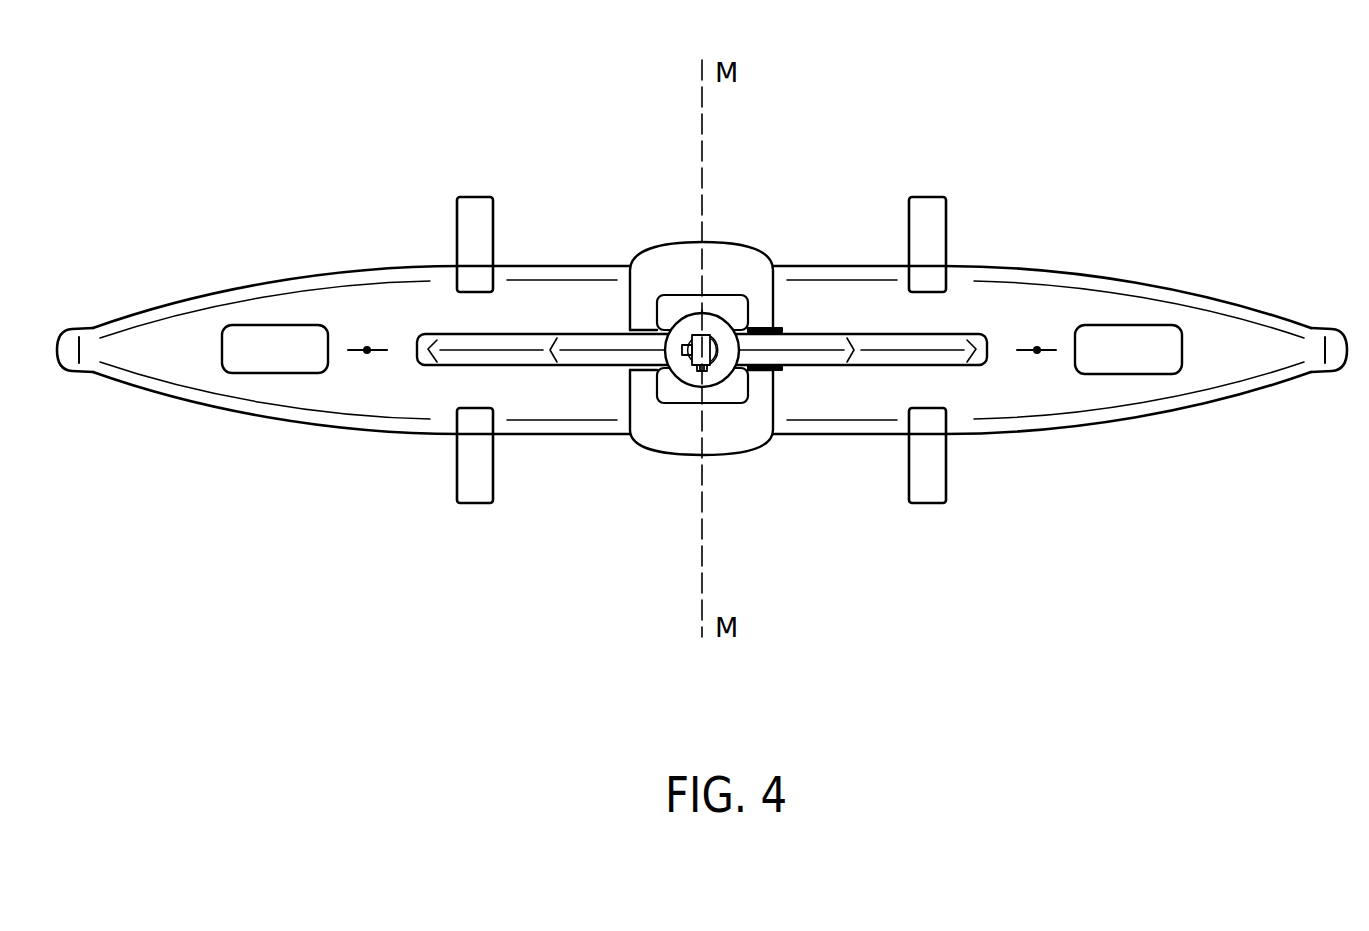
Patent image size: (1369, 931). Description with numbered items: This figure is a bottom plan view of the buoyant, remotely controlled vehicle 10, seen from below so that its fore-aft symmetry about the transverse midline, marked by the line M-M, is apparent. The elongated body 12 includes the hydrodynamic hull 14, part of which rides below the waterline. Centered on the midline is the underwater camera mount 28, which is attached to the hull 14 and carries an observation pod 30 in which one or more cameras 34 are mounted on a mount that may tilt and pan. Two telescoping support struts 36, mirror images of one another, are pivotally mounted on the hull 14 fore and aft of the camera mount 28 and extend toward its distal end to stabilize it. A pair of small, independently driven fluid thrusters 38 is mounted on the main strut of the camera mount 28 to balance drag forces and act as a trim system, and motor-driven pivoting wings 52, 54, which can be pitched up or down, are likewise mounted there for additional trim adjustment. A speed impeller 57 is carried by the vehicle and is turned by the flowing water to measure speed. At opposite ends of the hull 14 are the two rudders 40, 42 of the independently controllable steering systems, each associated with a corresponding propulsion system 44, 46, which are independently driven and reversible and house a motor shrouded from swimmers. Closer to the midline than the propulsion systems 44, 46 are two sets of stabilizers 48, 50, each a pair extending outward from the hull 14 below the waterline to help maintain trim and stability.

The vehicle 10 is at (284, 130).
The body 12 is at (1142, 268).
The hull 14 is at (1035, 303).
The underwater camera mount 28 is at (584, 330).
The observation pod 30 is at (715, 388).
The cameras 34 is at (692, 317).
The telescoping support struts 36 is at (592, 364).
The fluid thrusters 38 is at (717, 302).
The rudder 40 is at (352, 350).
The rudder 42 is at (1050, 350).
The propulsion system 44 is at (245, 350).
The propulsion system 46 is at (1158, 350).
The stabilizers 48 is at (465, 222).
The stabilizers 50 is at (940, 220).
The pivoting wing 52 is at (755, 263).
The pivoting wing 54 is at (682, 443).
The speed impeller 57 is at (782, 330).